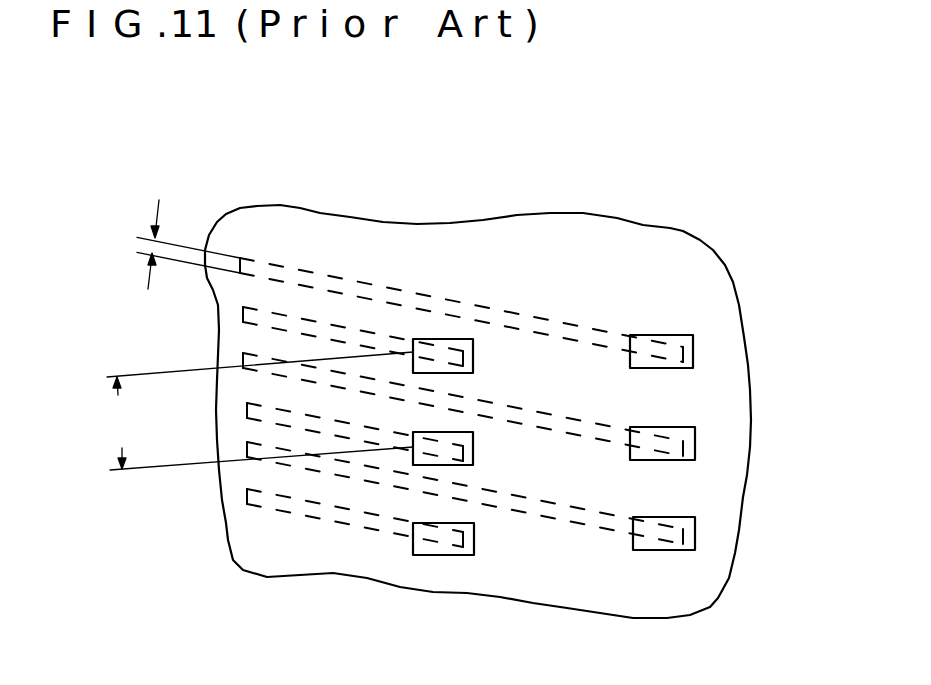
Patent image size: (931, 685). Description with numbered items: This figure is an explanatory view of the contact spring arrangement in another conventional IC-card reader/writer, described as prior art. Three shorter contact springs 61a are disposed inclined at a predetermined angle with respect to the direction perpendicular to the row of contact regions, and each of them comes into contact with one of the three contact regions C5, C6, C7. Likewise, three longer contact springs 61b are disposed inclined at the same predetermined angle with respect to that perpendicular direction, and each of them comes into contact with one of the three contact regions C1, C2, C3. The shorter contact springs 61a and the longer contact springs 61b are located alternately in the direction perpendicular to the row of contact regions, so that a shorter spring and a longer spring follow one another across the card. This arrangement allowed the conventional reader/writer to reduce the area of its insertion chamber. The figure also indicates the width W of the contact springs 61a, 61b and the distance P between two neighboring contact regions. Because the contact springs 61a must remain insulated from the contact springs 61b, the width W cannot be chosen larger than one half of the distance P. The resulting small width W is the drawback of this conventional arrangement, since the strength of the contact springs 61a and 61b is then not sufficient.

The shorter contact spring 61a is at (243, 307).
The longer contact spring 61b is at (358, 282).
The contact region C1 is at (694, 346).
The contact region C2 is at (695, 443).
The contact region C3 is at (695, 538).
The contact region C5 is at (473, 355).
The contact region C6 is at (473, 447).
The contact region C7 is at (440, 555).
The width of the contact springs W is at (168, 244).
The distance between two contact regions P is at (260, 411).